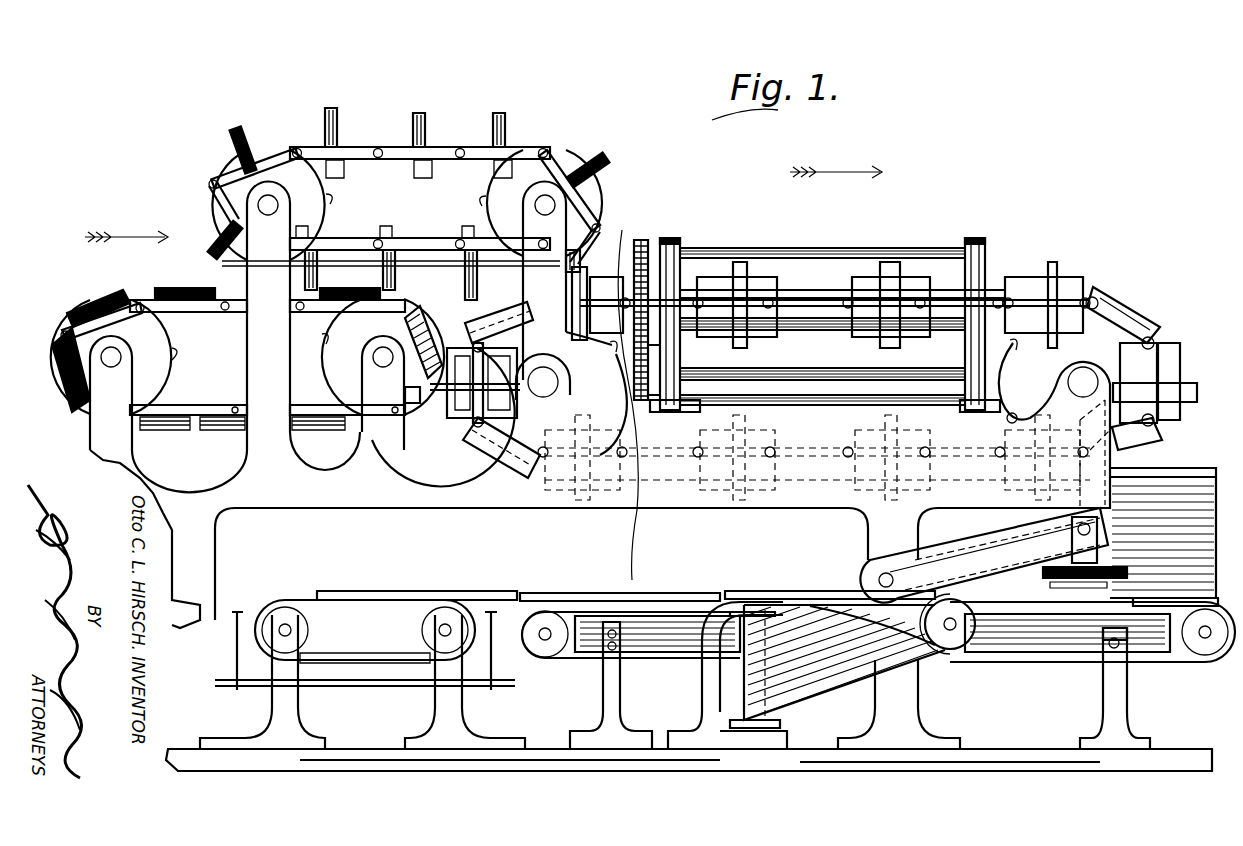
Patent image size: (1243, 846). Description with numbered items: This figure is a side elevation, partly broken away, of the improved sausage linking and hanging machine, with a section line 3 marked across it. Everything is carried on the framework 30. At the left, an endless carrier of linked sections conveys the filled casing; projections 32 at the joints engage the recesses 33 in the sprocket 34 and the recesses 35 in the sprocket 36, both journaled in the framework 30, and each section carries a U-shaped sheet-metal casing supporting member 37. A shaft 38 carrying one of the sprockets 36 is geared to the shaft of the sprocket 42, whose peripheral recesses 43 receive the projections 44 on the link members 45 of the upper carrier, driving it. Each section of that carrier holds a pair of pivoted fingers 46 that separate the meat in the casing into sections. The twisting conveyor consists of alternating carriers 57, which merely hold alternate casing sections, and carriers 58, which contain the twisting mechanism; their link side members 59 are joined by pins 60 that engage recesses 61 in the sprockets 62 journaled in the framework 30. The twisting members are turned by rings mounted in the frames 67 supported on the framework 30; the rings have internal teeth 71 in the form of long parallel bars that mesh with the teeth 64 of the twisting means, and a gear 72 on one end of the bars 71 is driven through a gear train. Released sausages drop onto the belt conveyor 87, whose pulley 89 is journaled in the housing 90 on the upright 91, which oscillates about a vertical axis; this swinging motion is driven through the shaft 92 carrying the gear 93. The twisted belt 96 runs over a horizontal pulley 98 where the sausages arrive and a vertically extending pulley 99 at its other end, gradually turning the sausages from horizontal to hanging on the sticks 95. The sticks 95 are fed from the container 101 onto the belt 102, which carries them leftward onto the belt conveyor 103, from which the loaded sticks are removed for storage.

The section line 3 is at (575, 580).
The framework 30 is at (402, 508).
The projections 32 is at (140, 300).
The recesses 33 is at (180, 355).
The sprocket 34 is at (160, 376).
The recesses 35 is at (325, 340).
The sprocket 36 is at (330, 366).
The U-shaped casing supporting member 37 is at (196, 298).
The shaft 38 is at (402, 413).
The sprocket 42 is at (312, 212).
The peripheral recesses 43 is at (333, 200).
The projections 44 is at (297, 148).
The link members 45 is at (353, 148).
The fingers 46 is at (244, 138).
The carriers 57 is at (1128, 312).
The carriers 58 is at (1075, 283).
The link side members 59 is at (1040, 305).
The pins 60 is at (1100, 300).
The recesses 61 is at (622, 348).
The sprockets 62 is at (838, 400).
The teeth 64 is at (1056, 264).
The frames 67 is at (678, 245).
The internal teeth 71 is at (836, 256).
The gear 72 is at (632, 262).
The belt conveyor 87 is at (1105, 540).
The pulley 89 is at (876, 582).
The housing 90 is at (880, 566).
The upright 91 is at (1097, 525).
The shaft 92 is at (1150, 505).
The gear 93 is at (1130, 574).
The sticks 95 is at (440, 602).
The belt 96 is at (808, 662).
The horizontal pulley 98 is at (955, 640).
The vertically extending pulley or roller 99 is at (738, 698).
The container 101 is at (1196, 586).
The belt 102 is at (536, 600).
The belt conveyor 103 is at (312, 592).